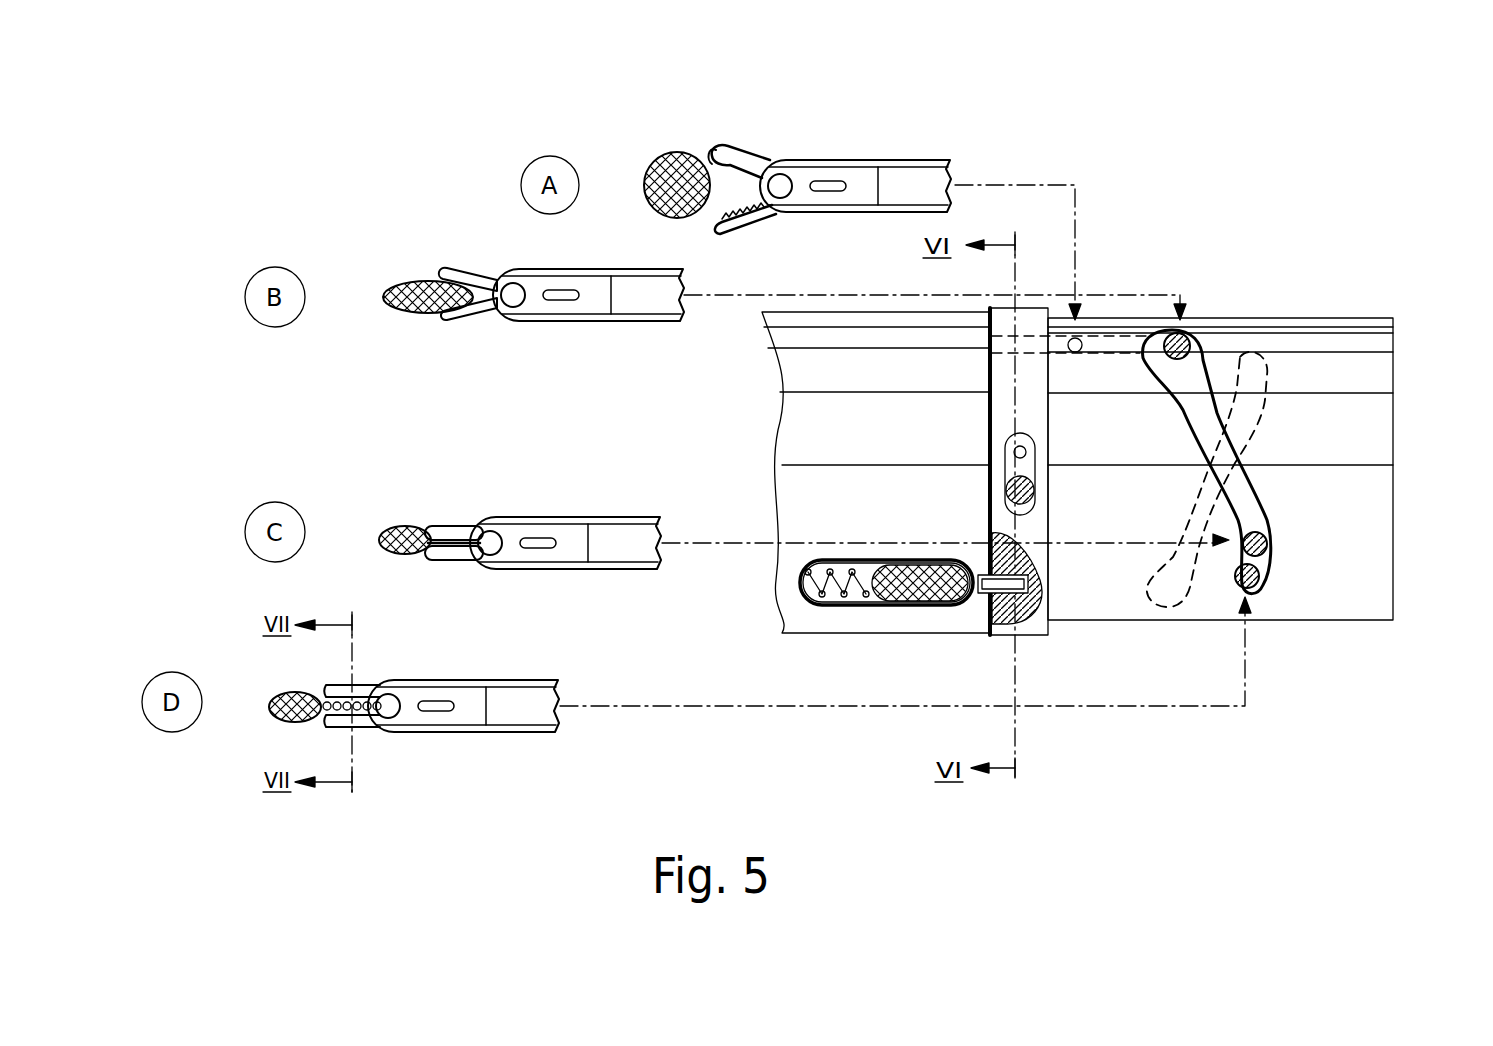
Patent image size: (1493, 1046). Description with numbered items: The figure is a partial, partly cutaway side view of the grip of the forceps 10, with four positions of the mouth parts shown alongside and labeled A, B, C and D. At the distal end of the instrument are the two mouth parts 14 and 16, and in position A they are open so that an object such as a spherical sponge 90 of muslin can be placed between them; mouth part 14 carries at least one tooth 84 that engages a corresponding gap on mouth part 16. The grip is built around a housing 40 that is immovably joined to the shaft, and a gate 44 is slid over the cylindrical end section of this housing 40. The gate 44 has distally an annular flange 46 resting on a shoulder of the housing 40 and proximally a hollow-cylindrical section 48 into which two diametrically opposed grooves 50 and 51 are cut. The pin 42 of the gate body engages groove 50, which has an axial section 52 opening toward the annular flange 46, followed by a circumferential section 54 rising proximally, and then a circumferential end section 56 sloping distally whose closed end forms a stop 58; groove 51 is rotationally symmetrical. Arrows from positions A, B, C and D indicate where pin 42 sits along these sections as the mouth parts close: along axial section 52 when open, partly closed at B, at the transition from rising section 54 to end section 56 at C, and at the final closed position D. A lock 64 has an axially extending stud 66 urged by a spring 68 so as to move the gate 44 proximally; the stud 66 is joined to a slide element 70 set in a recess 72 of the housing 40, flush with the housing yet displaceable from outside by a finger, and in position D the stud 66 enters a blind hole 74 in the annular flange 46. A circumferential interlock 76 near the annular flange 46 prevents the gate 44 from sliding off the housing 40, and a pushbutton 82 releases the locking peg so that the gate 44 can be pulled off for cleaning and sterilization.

The forceps 10 is at (1104, 180).
The mouth part 14 is at (745, 155).
The mouth part 16 is at (736, 222).
The housing 40 is at (800, 368).
The pin 42 is at (1080, 352).
The gate 44 is at (1312, 330).
The annular flange 46 is at (1000, 640).
The hollow-cylindrical section 48 is at (1103, 597).
The groove 50 is at (1200, 365).
The groove 51 is at (1250, 437).
The axial section 52 is at (1118, 345).
The circumferential section 54 is at (1205, 430).
The circumferential end section 56 is at (1260, 562).
The stop 58 is at (1262, 588).
The lock 64 is at (889, 620).
The stud 66 is at (838, 560).
The spring 68 is at (837, 608).
The slide element 70 is at (918, 562).
The recess 72 is at (800, 572).
The blind hole 74 is at (1002, 634).
The interlock 76 is at (978, 449).
The pushbutton 82 is at (1037, 490).
The tooth 84 is at (706, 152).
The spherical sponge 90 is at (672, 165).